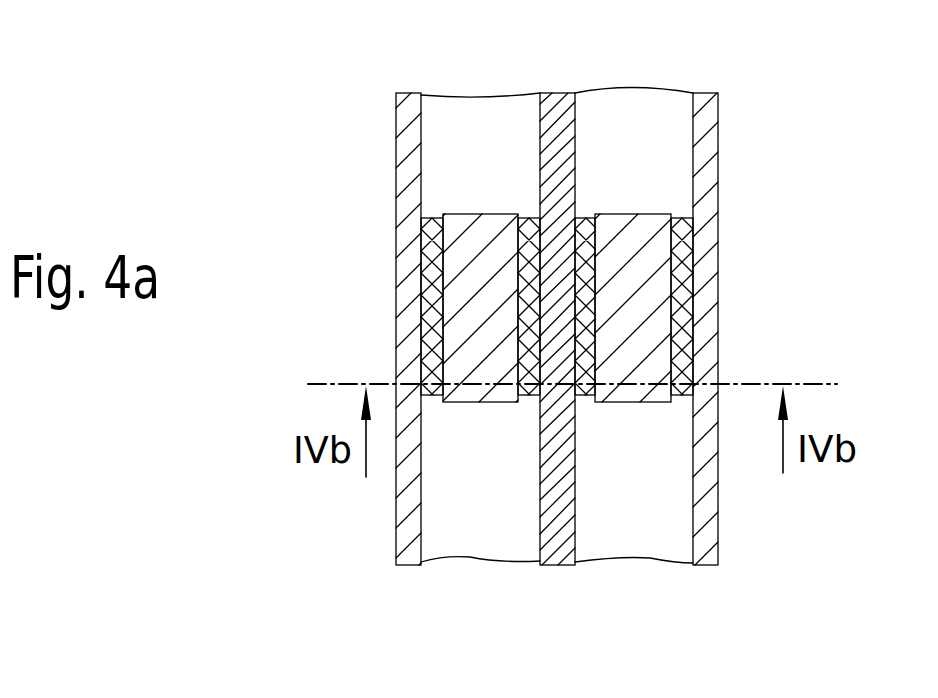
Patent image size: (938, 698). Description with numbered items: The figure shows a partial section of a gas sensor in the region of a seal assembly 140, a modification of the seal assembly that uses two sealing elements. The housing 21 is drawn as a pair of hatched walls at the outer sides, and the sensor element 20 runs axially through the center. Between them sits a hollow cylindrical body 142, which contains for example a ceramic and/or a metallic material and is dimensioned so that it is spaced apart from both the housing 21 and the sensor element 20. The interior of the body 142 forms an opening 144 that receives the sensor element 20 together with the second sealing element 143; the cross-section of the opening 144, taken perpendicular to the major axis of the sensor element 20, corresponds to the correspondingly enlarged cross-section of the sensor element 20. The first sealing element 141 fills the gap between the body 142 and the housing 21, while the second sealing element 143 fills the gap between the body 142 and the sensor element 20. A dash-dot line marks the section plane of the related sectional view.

The sensor element 20 is at (578, 128).
The housing 21 is at (410, 138).
The seal assembly 140 is at (460, 172).
The first sealing element 141 is at (433, 256).
The hollow cylindrical body 142 is at (460, 300).
The second sealing element 143 is at (530, 344).
The opening 144 is at (530, 217).